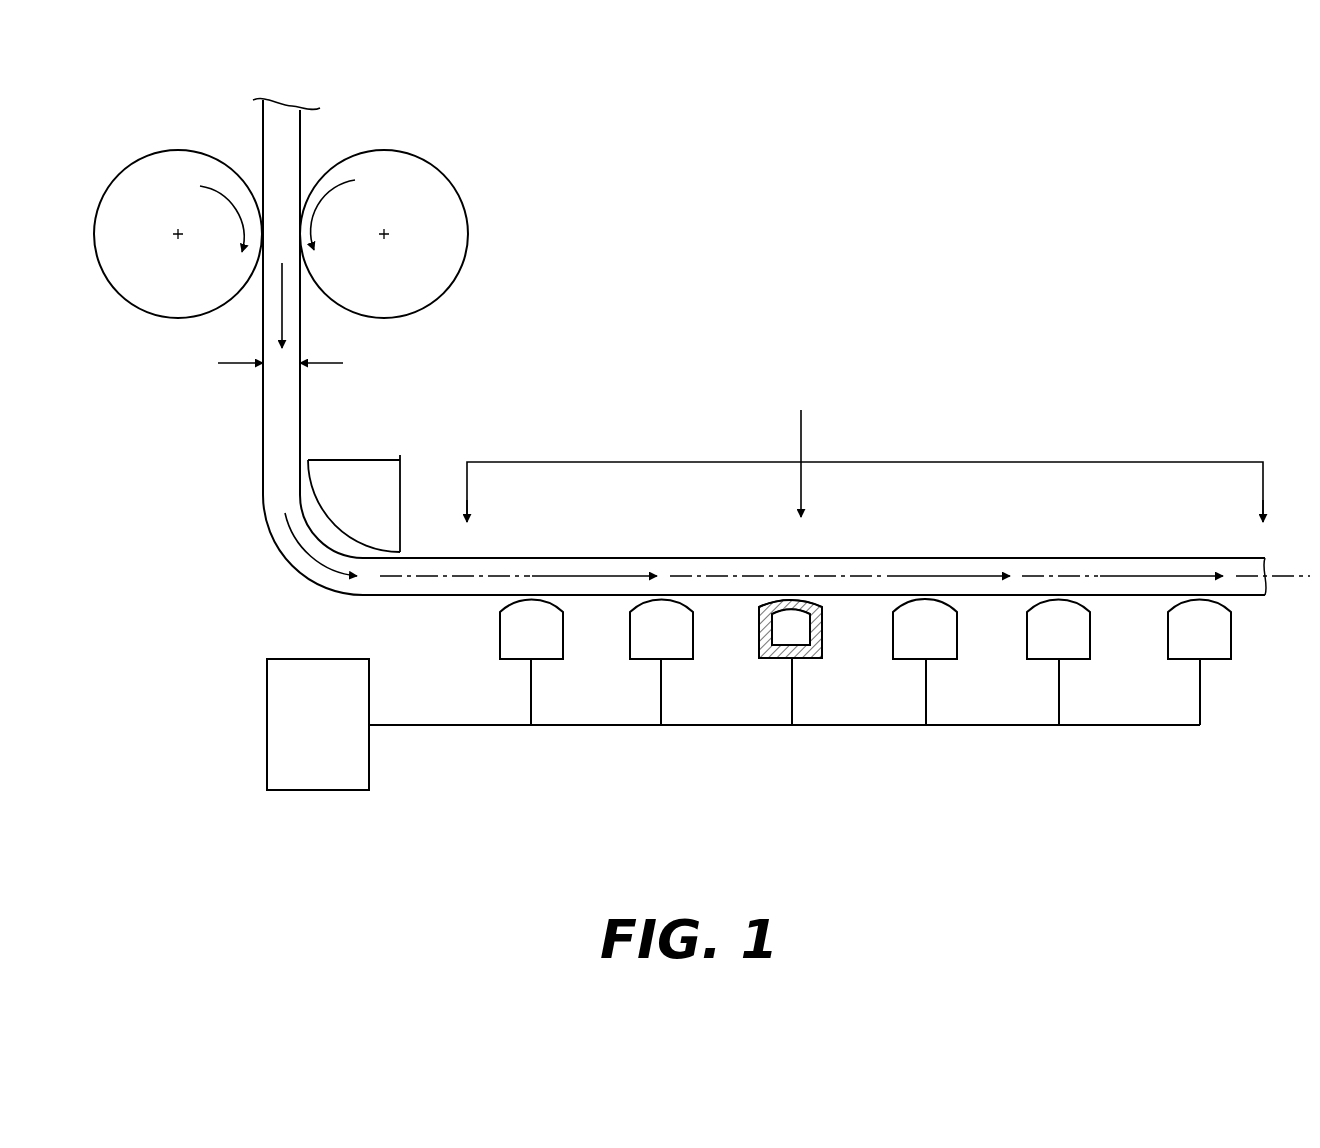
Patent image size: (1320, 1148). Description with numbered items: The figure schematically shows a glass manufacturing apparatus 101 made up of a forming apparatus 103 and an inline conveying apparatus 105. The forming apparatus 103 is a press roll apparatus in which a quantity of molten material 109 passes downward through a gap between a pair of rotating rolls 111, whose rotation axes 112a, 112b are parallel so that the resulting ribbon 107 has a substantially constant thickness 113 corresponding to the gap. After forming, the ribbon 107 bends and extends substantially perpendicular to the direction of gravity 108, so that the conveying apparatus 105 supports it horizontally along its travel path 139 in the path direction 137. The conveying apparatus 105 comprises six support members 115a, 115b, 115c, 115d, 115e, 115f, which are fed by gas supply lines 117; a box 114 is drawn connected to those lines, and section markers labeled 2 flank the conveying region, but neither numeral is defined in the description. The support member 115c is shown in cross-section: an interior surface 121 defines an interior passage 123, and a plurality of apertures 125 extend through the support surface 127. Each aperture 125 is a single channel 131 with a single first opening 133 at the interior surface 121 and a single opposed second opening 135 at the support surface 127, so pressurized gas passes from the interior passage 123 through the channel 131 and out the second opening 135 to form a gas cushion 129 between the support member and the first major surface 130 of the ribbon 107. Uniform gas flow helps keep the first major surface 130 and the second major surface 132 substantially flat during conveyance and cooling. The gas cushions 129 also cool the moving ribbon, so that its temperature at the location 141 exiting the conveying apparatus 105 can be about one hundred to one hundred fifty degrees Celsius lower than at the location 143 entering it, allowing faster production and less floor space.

The glass manufacturing apparatus 101 is at (602, 277).
The forming apparatus 103 is at (434, 97).
The conveying apparatus 105 is at (968, 768).
The ribbon 107 is at (300, 407).
The direction of gravity 108 is at (803, 436).
The quantity of molten material 109 is at (300, 123).
The rotating rolls 111 is at (291, 247).
The rotation axis 112a is at (183, 228).
The rotation axis 112b is at (390, 232).
The thickness 113 is at (236, 365).
The controller 114 is at (267, 712).
The support member 115a is at (553, 678).
The support member 115b is at (636, 663).
The support member 115c is at (849, 631).
The support member 115d is at (940, 663).
The support member 115e is at (1073, 663).
The support member 115f is at (1212, 663).
The gas supply lines 117 is at (530, 695).
The interior surface 121 is at (782, 646).
The interior passage 123 is at (800, 646).
The apertures 125 is at (764, 606).
The support surface 127 is at (793, 596).
The gas cushion 129 is at (962, 600).
The first major surface 130 is at (432, 600).
The single channel 131 is at (818, 612).
The second major surface 132 is at (504, 556).
The first opening 133 is at (816, 640).
The second opening 135 is at (808, 606).
The path direction 137 is at (1145, 575).
The travel path 139 is at (1040, 575).
The location exiting the conveying apparatus 141 is at (1250, 577).
The location entering the conveying apparatus 143 is at (428, 570).
The section line 2- 2 is at (864, 509).